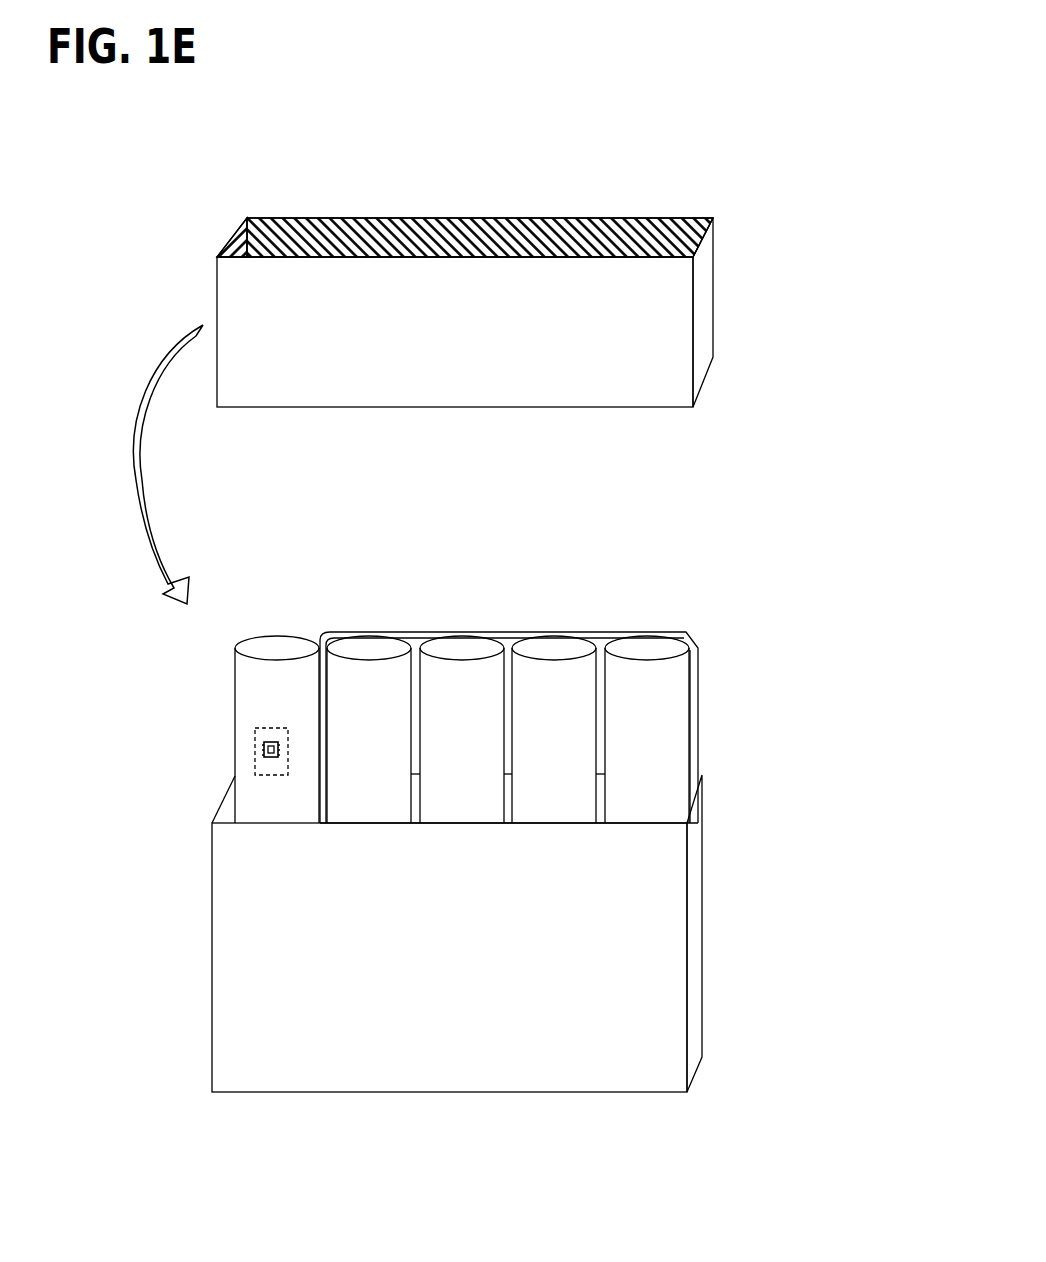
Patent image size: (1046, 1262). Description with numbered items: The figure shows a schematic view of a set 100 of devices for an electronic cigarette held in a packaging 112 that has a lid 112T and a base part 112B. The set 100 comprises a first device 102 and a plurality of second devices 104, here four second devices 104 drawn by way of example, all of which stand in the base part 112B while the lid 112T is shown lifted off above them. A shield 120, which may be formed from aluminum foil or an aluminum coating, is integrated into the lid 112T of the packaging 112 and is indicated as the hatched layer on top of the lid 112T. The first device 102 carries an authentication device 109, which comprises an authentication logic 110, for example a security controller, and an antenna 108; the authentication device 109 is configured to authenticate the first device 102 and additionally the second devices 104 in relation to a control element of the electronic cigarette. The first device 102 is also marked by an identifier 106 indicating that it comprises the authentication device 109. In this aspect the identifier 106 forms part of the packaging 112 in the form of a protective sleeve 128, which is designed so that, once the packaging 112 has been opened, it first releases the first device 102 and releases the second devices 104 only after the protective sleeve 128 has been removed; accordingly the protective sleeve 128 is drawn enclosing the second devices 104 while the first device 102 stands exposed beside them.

The set 100 is at (752, 538).
The first device 102 is at (267, 637).
The second device 104 is at (388, 640).
The identifier 106 is at (574, 727).
The protective sleeve 128 is at (698, 685).
The antenna 108 is at (266, 748).
The authentication device 109 is at (133, 693).
The authentication logic 110 is at (265, 758).
The packaging 112 is at (548, 608).
The lid 112T is at (551, 266).
The base part 112B is at (707, 910).
The shield 120 is at (288, 230).